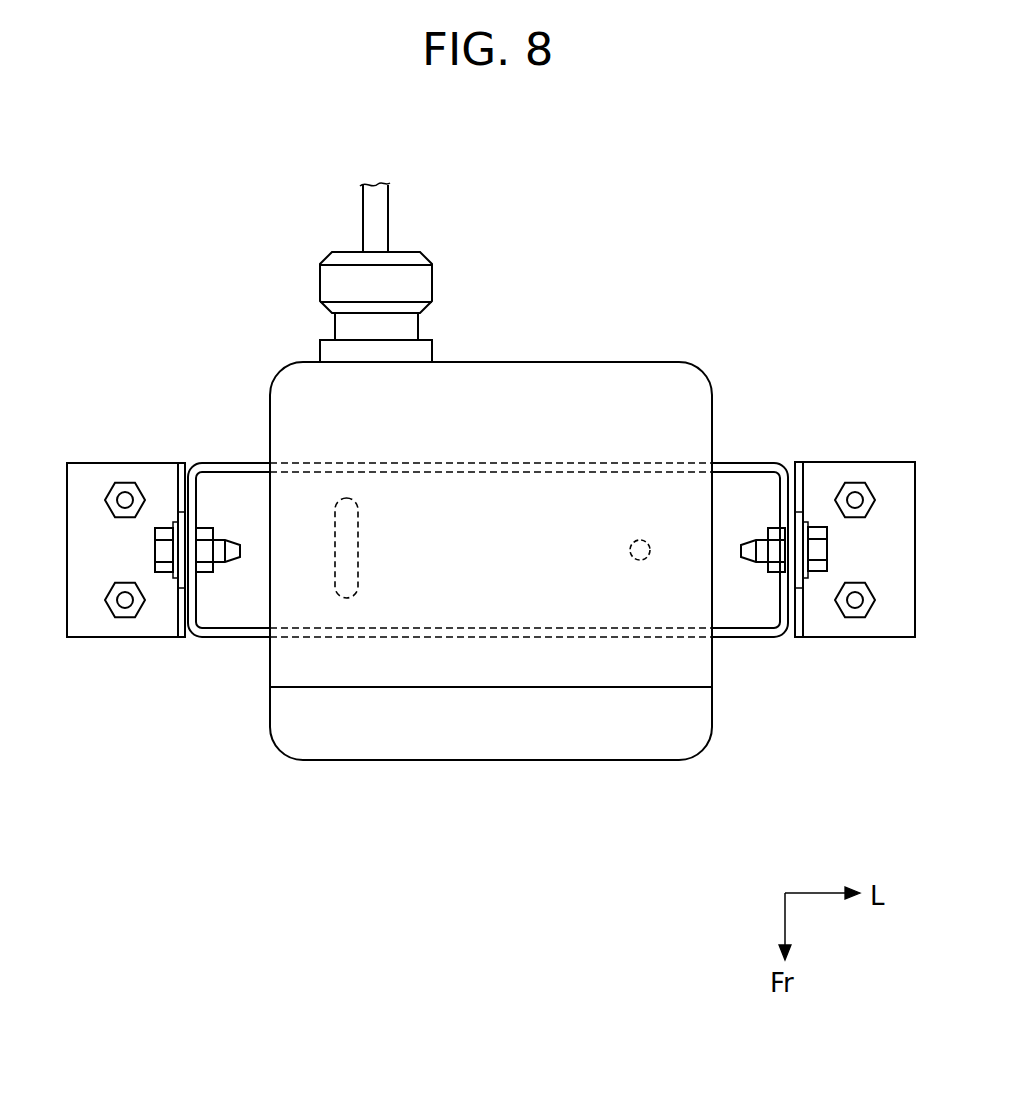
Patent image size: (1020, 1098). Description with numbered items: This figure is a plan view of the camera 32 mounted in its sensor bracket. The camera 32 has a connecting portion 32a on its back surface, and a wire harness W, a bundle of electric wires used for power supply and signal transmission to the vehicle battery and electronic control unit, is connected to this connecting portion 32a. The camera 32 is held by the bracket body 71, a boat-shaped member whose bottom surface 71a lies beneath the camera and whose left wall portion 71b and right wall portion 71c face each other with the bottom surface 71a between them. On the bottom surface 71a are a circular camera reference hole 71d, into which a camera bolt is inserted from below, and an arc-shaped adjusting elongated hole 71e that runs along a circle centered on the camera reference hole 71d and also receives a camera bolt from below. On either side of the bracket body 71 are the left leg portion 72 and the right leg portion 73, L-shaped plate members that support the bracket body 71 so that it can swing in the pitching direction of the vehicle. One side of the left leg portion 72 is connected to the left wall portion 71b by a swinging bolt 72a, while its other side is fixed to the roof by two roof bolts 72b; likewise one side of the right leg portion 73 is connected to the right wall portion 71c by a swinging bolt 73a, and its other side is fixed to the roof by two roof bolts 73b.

The camera 32 is at (592, 375).
The connecting portion 32a is at (425, 278).
The wire harness W is at (390, 215).
The bracket body 71 is at (514, 534).
The bottom surface 71a is at (735, 612).
The left wall portion 71b is at (773, 612).
The right wall portion 71c is at (206, 602).
The camera reference hole 71d is at (639, 561).
The adjusting elongated hole 71e is at (356, 558).
The left leg portion 72 is at (848, 547).
The swinging bolt 72a is at (817, 528).
The roof bolts 72b is at (872, 512).
The right leg portion 73 is at (143, 544).
The swinging bolt 73a is at (158, 527).
The roof bolts 73b is at (112, 514).